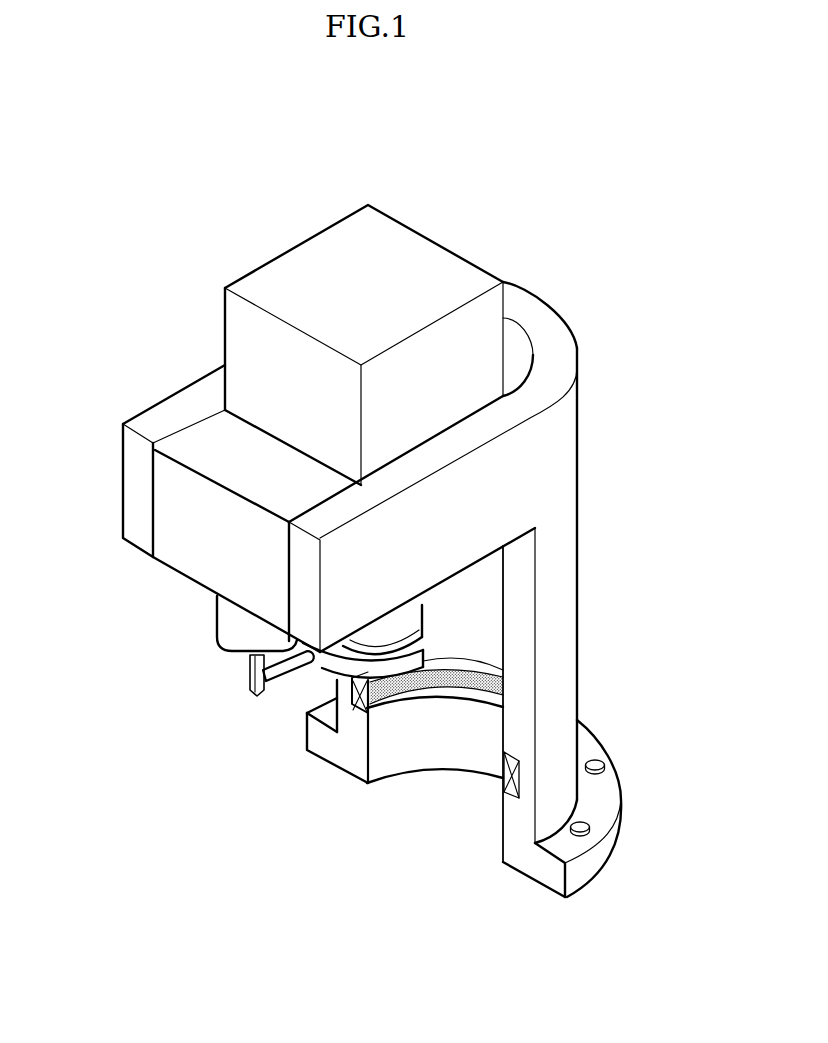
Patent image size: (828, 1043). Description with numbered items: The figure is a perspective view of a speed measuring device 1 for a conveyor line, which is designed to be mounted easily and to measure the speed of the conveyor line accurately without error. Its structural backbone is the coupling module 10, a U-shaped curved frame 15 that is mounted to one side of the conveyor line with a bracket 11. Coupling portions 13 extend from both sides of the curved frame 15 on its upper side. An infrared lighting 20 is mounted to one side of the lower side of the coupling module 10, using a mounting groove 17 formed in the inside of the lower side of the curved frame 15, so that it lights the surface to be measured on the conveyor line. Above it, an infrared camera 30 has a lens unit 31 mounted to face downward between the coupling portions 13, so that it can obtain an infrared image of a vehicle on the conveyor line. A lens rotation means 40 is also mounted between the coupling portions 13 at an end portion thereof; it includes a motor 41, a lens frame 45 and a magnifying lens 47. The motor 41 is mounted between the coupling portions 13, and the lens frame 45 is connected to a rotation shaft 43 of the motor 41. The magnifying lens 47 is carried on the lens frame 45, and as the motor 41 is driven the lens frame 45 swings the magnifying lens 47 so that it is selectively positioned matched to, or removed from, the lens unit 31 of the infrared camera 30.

The speed measuring device 1 is at (360, 143).
The coupling module 10 is at (590, 336).
The bracket 11 is at (592, 795).
The coupling portions 13 is at (142, 475).
The curved frame 15 is at (528, 313).
The mounting groove 17 is at (514, 786).
The infrared lighting 20 is at (507, 773).
The infrared camera 30 is at (428, 262).
The lens unit 31 is at (397, 605).
The lens rotation means 40 is at (207, 652).
The motor 41 is at (207, 550).
The rotation shaft 43 is at (250, 667).
The lens frame 45 is at (345, 657).
The magnifying lens 47 is at (422, 627).